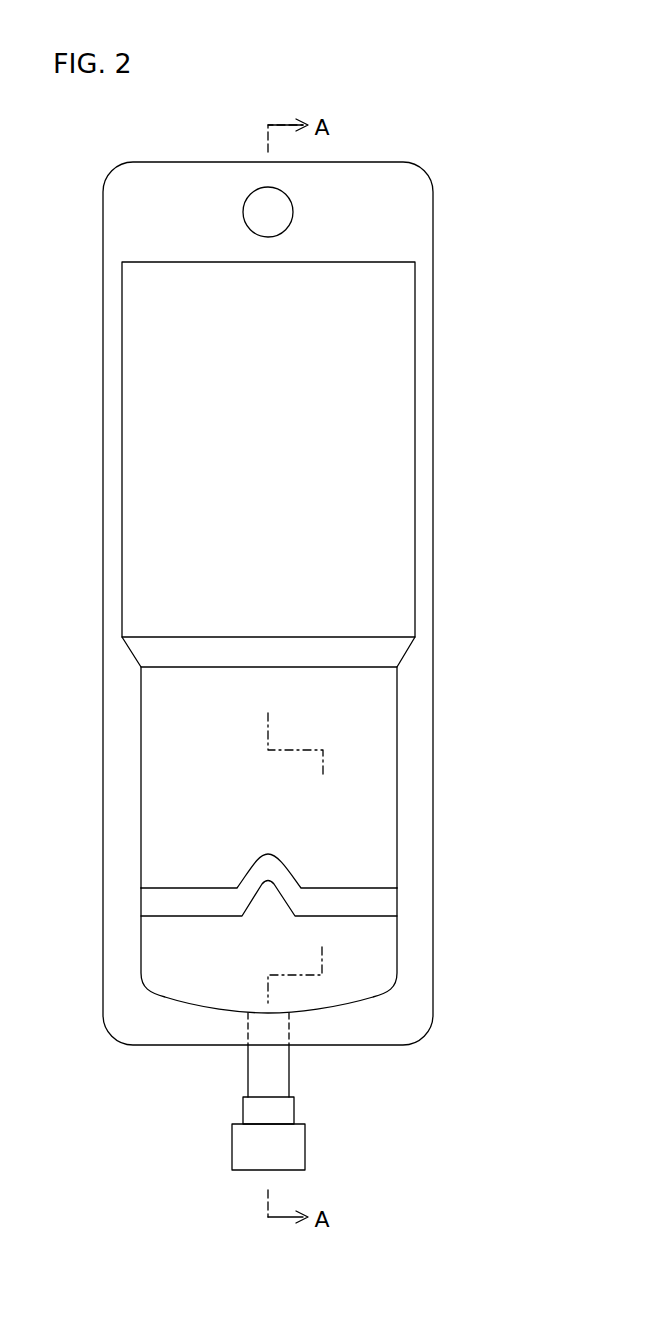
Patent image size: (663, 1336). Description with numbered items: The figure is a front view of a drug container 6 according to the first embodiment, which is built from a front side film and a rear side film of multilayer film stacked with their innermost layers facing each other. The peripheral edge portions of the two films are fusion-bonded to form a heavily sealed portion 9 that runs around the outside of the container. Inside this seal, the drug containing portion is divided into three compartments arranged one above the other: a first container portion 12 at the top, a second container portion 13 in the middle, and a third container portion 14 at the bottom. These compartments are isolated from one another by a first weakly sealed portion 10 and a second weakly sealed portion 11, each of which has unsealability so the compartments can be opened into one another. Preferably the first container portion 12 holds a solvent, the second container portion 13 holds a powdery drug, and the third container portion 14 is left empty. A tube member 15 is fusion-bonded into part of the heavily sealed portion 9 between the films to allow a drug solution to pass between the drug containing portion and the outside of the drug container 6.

The drug container 6 is at (423, 147).
The heavily sealed portion 9 is at (165, 177).
The first weakly sealed portion 10 is at (315, 638).
The second weakly sealed portion 11 is at (350, 888).
The first container portion 12 is at (403, 335).
The second container portion 13 is at (383, 725).
The third container portion 14 is at (380, 937).
The tube member 15 is at (305, 1144).